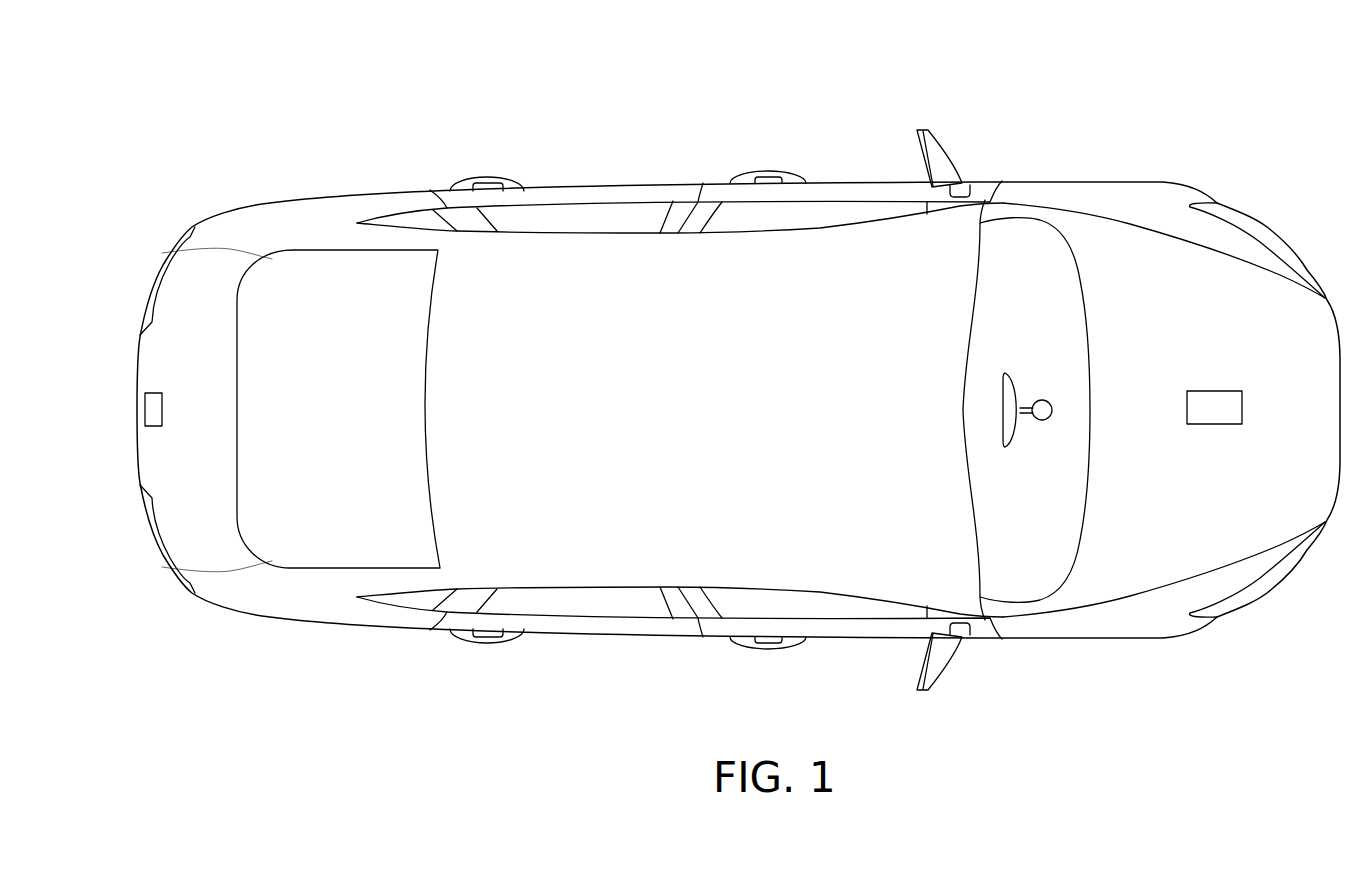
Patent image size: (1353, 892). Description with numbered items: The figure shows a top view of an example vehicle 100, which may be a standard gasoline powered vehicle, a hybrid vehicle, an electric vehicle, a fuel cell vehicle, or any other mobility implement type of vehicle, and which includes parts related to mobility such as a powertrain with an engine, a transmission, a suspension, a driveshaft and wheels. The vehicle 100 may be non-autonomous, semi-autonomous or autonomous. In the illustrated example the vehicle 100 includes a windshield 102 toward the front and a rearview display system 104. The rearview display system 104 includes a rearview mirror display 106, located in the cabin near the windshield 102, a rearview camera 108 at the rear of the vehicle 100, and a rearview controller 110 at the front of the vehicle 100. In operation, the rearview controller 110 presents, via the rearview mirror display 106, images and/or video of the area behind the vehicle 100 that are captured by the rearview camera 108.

The vehicle 100 is at (1208, 123).
The windshield 102 is at (1035, 257).
The rearview display system 104 is at (1032, 443).
The rearview mirror display 106 is at (1008, 409).
The rearview camera 108 is at (152, 408).
The rearview controller 110 is at (1232, 420).